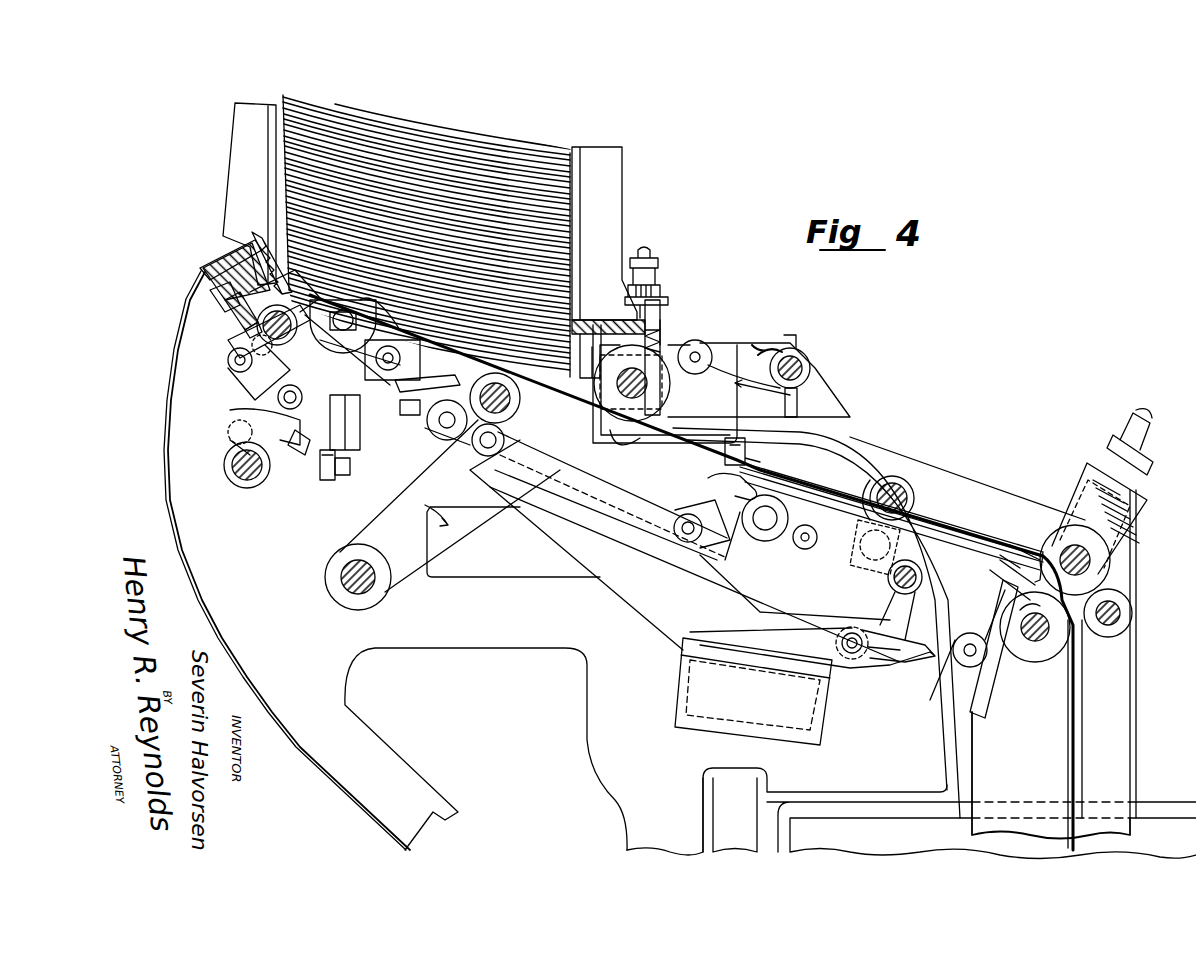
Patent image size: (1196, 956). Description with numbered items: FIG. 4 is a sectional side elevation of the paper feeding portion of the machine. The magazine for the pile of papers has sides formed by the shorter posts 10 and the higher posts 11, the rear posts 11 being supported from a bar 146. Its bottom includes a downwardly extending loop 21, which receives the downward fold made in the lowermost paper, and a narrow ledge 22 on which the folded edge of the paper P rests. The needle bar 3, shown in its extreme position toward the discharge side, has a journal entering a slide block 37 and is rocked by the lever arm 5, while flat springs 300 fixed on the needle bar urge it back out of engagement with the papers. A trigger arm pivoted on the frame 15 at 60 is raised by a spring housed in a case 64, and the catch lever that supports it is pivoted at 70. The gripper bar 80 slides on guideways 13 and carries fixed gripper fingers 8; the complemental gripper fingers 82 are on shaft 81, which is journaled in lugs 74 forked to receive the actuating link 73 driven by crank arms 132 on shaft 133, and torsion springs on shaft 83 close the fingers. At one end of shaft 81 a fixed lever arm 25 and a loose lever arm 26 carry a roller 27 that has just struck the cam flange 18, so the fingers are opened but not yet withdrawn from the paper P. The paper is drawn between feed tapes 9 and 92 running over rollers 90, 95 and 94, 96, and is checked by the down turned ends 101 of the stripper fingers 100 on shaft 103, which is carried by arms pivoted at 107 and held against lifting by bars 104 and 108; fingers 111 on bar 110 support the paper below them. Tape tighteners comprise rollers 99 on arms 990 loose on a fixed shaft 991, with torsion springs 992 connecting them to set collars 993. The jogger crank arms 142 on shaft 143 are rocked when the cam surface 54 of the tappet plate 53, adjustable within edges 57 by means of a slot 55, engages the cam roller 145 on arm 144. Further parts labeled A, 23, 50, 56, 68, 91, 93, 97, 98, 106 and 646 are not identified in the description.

The stack of sheets A is at (510, 175).
The paper P is at (691, 572).
The needle bar 3 is at (410, 409).
The lever arm 5 is at (232, 434).
The fixed gripper fingers 8 is at (715, 480).
The feed tape 9 is at (622, 440).
The posts 10 is at (605, 180).
The posts 11 is at (242, 150).
The guideways 13 is at (748, 590).
The frame 15 is at (590, 683).
The cam flange 18 is at (913, 650).
The downwardly extending loop 21 is at (272, 306).
The ledge 22 is at (570, 325).
The roller 23 is at (447, 411).
The lever arm 25 is at (740, 585).
The lever arm 26 is at (808, 606).
The roller 27 is at (850, 660).
The slide block 37 is at (358, 425).
The shaft 50 is at (252, 485).
The tappet plate 53 is at (240, 412).
The cam surface 54 is at (230, 365).
The slot 55 is at (278, 397).
The roller 56 is at (382, 360).
The edges 57 is at (302, 442).
The pivot 60 is at (440, 443).
The case 64 is at (252, 342).
The bracket 68 is at (876, 493).
The pivot 70 is at (318, 470).
The actuating link 73 is at (642, 520).
The lugs 74 is at (690, 545).
The gripper bar 80 is at (725, 570).
The shaft 81 is at (742, 512).
The gripper fingers 82 is at (722, 466).
The shaft 83 is at (816, 534).
The roller 90 is at (506, 438).
The feed roller 91 is at (522, 398).
The feed tape 92 is at (945, 472).
The roller 93 is at (650, 392).
The roller 94 is at (665, 345).
The roller 95 is at (1035, 655).
The roller 96 is at (1108, 562).
The guide plate 97 is at (1120, 686).
The roller 98 is at (1130, 608).
The rollers 99 is at (706, 346).
The stripper fingers 100 is at (800, 485).
The down turned ends 101 is at (800, 466).
The shaft 103 is at (915, 498).
The bar 104 is at (1010, 555).
The guide 106 is at (1072, 750).
The pivot 107 is at (985, 568).
The bar 108 is at (745, 455).
The bar 110 is at (864, 547).
The fingers 111 is at (805, 500).
The crank arms 132 is at (440, 515).
The shaft 133 is at (345, 572).
The jogger crank arms 142 is at (254, 238).
The shaft 143 is at (235, 302).
The arm 144 is at (248, 326).
The cam roller 145 is at (232, 348).
The bar 146 is at (205, 272).
The flat springs 300 is at (333, 341).
The bolt 646 is at (352, 465).
The arms 990 is at (765, 345).
The fixed shaft 991 is at (803, 365).
The torsion springs 992 is at (800, 350).
The set collars 993 is at (815, 378).